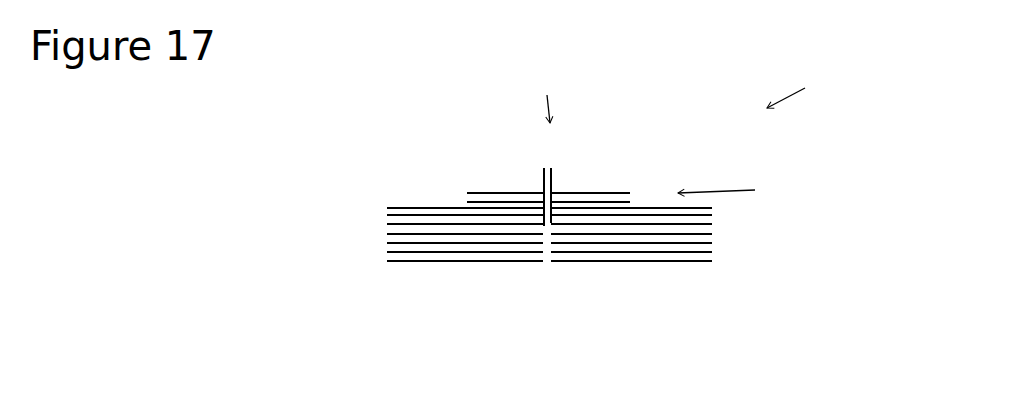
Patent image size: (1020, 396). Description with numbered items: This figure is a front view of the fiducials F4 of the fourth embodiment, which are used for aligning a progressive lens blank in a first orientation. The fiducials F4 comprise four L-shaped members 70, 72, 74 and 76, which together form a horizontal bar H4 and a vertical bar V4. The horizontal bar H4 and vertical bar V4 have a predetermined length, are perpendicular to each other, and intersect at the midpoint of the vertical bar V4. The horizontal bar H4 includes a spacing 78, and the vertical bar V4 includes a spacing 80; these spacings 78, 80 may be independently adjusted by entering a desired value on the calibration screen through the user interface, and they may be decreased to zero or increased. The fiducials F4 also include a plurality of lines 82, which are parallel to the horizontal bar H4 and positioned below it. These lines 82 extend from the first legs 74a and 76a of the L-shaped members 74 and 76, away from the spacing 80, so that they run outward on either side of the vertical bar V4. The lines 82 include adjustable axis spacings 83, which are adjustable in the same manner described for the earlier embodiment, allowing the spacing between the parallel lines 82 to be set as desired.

The L-shaped member 70 is at (533, 182).
The L-shaped member 72 is at (577, 183).
The L-shaped member 74 is at (567, 213).
The first leg 74a is at (552, 216).
The L-shaped member 76 is at (520, 210).
The first leg 76a is at (543, 212).
The spacing 78 is at (633, 196).
The spacing 80 is at (548, 172).
The lines 82 is at (373, 243).
The adjustable axis spacings 83 is at (387, 219).
The vertical bar V4 is at (547, 92).
The horizontal bar H4 is at (734, 189).
The fiducials F4 is at (816, 85).